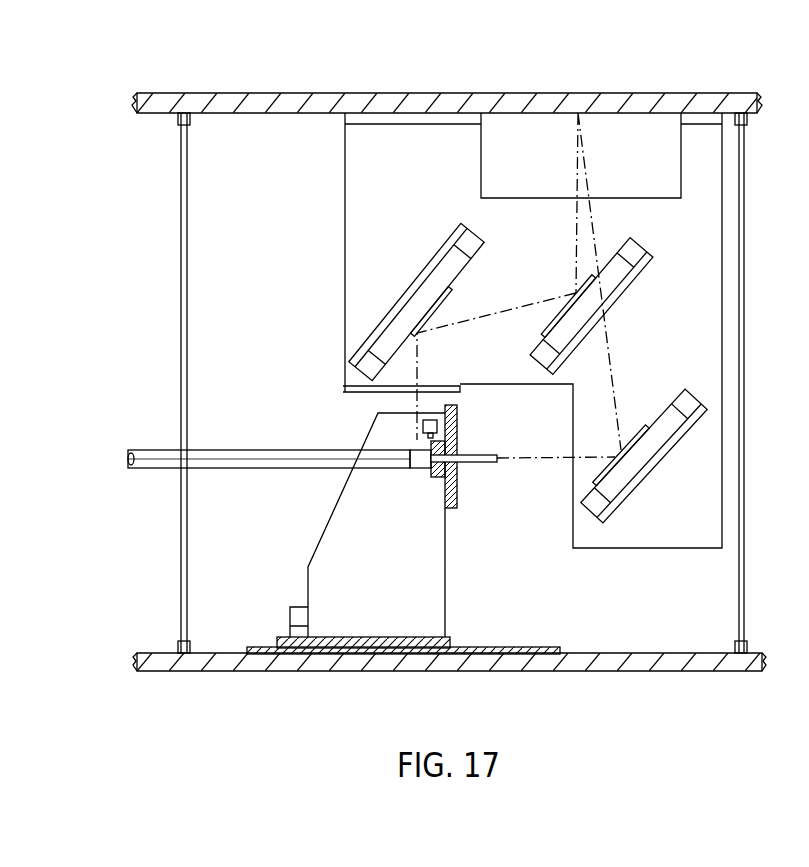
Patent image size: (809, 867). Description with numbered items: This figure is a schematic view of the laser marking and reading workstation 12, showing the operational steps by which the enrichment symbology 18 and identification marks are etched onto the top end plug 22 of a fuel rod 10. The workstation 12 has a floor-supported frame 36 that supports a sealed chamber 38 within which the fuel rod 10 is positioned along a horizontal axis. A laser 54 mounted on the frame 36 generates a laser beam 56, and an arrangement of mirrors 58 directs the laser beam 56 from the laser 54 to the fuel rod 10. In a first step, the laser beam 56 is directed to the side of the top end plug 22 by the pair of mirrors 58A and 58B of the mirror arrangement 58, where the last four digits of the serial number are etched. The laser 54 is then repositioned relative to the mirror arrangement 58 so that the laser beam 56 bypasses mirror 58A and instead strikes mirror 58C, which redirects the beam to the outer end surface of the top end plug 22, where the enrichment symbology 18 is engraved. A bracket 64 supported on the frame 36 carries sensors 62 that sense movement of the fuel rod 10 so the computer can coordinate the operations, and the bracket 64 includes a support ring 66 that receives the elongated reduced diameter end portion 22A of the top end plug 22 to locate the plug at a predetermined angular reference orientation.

The fuel rod 10 is at (165, 450).
The laser marking and reading workstation 12 is at (707, 73).
The enrichment symbology 18 is at (306, 402).
The top end plug 22 is at (405, 470).
The elongated reduced diameter end portion 22A is at (476, 468).
The frame 36 is at (727, 672).
The sealed chamber 38 is at (266, 140).
The laser 54 is at (626, 135).
The laser beam 56 is at (592, 247).
The arrangement of mirrors 58 is at (684, 315).
The mirror 58A is at (553, 314).
The mirror 58B is at (442, 308).
The mirror 58C is at (629, 430).
The sensors 62 is at (430, 420).
The bracket 64 is at (433, 575).
The support ring 66 is at (436, 480).